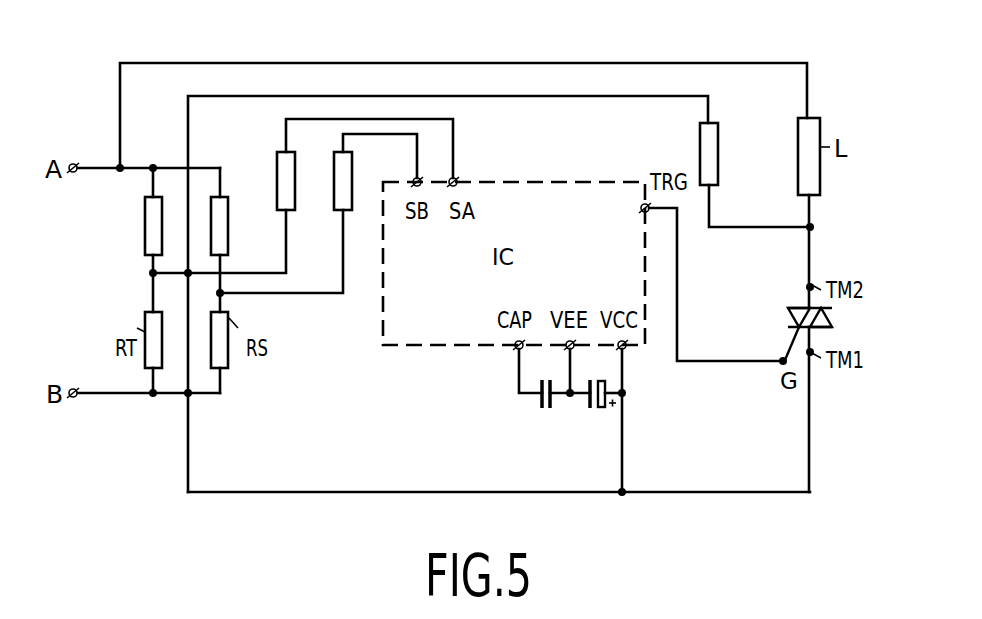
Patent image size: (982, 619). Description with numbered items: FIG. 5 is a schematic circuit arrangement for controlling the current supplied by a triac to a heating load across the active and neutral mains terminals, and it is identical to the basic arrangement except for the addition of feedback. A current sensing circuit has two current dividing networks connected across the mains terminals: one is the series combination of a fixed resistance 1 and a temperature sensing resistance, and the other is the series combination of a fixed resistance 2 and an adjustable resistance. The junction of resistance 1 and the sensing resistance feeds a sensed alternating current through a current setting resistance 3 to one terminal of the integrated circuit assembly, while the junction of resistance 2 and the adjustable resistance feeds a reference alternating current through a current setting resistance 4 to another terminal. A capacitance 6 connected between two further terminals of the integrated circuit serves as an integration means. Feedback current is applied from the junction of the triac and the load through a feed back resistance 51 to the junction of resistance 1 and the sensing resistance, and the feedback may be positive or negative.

The fixed resistance 1 is at (145, 223).
The fixed resistance 2 is at (228, 222).
The current setting resistance 3 is at (277, 174).
The current setting resistance 4 is at (334, 187).
The feed back resistance 51 is at (719, 146).
The capacitance 6 is at (537, 394).